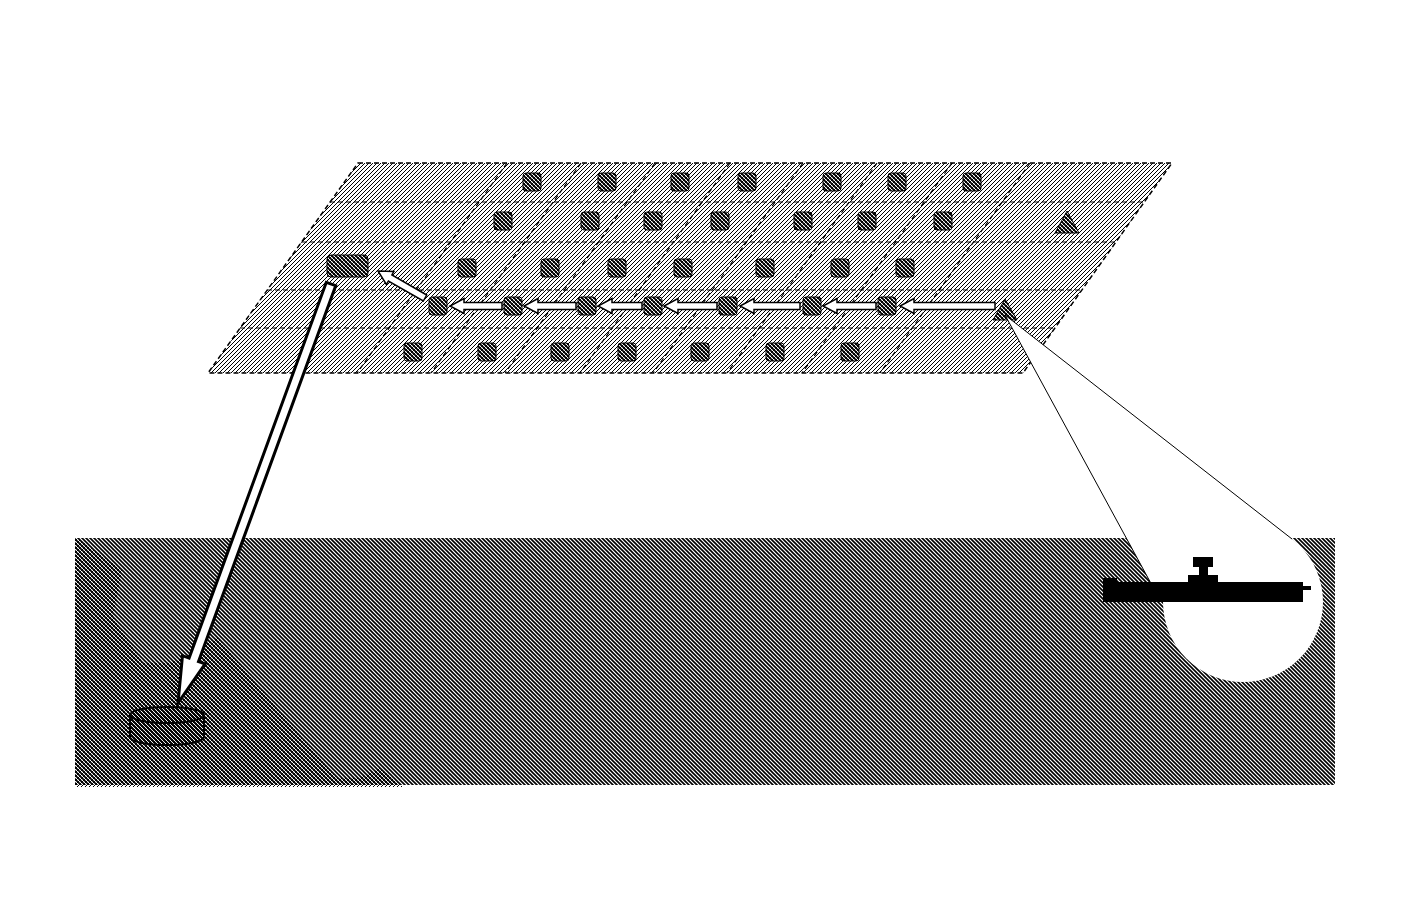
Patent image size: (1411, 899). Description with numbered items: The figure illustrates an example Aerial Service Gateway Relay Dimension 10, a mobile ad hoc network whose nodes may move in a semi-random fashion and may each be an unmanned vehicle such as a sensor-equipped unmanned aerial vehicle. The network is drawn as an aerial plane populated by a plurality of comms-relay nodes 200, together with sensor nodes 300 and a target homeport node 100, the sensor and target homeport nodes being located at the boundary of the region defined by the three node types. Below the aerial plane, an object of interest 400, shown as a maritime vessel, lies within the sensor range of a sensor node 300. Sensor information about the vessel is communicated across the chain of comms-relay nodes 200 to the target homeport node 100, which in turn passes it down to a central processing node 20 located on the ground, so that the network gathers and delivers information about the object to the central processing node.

The Aerial Service Gateway Relay Dimension 10 is at (683, 427).
The comms-relay nodes 200 is at (745, 145).
The sensor nodes 300 is at (1076, 203).
The target homeport node 100 is at (326, 257).
The central processing node 20 is at (126, 722).
The object of interest 400 is at (1210, 627).